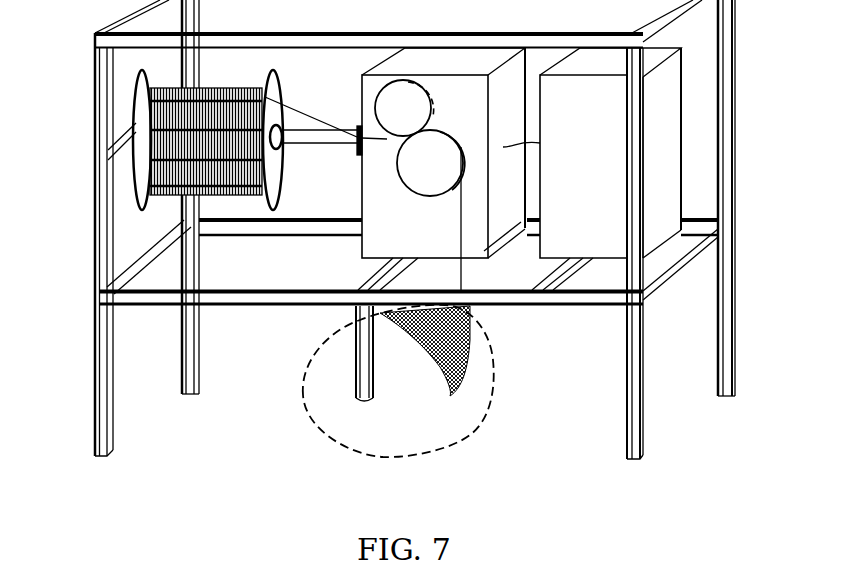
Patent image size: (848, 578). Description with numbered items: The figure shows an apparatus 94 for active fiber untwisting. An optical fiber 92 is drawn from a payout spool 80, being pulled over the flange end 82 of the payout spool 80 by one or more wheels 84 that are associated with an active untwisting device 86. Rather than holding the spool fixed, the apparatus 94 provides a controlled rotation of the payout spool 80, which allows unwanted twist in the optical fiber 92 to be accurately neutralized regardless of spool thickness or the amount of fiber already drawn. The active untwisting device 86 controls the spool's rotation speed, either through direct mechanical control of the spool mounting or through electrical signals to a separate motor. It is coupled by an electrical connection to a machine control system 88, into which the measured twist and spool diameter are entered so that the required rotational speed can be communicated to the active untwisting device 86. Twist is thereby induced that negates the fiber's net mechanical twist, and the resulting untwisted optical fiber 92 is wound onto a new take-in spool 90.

The payout spool 80 is at (135, 120).
The flange end 82 is at (273, 171).
The wheels 84 is at (428, 167).
The active untwisting device 86 is at (447, 62).
The machine control system 88 is at (662, 123).
The take-in spool 90 is at (407, 410).
The optical fiber 92 is at (310, 110).
The apparatus 94 is at (250, 428).